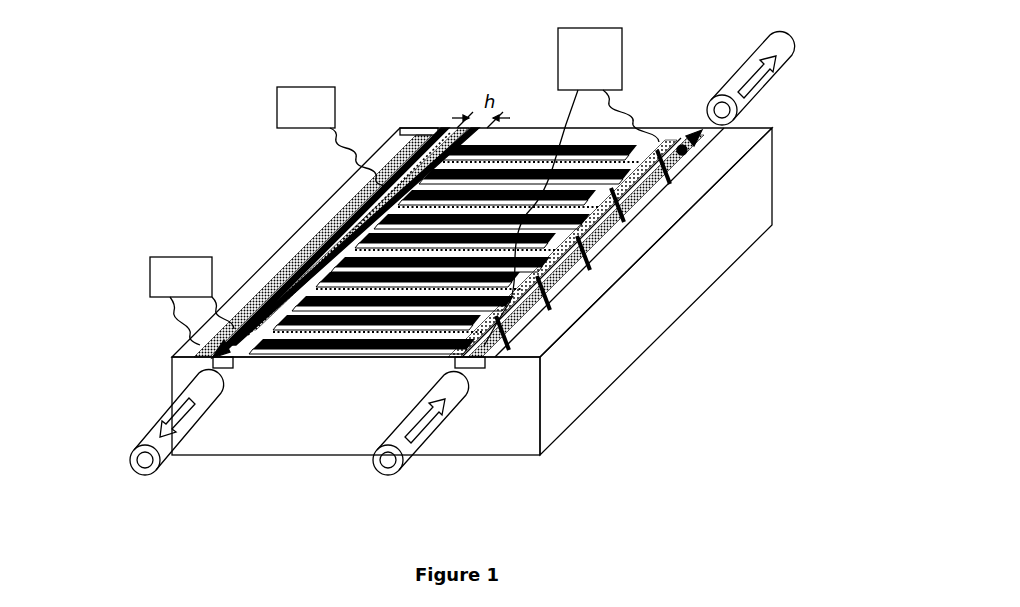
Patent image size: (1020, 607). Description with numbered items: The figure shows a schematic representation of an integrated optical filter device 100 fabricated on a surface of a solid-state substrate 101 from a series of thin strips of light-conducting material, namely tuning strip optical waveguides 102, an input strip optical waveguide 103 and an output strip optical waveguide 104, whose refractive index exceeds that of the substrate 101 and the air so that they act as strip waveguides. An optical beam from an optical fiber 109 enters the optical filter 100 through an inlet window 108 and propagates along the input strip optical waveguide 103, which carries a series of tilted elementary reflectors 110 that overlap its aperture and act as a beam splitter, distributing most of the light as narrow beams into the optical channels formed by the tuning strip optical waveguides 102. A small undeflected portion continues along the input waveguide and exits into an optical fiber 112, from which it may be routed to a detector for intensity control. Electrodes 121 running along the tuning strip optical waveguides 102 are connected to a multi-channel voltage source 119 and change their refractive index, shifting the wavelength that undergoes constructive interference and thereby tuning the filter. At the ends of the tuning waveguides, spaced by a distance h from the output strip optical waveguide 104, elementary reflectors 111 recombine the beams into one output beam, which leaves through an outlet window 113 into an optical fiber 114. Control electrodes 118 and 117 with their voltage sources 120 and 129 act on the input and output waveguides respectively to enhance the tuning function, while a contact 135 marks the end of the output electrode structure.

The integrated optical filter device 100 is at (436, 106).
The solid-state substrate 101 is at (617, 342).
The tuning strip optical waveguide 102 is at (572, 267).
The input strip optical waveguide 103 is at (650, 200).
The output strip optical waveguide 104 is at (438, 135).
The inlet window 108 is at (482, 368).
The optical fiber 109 is at (443, 417).
The elementary reflectors 110 is at (588, 267).
The elementary reflectors 111 is at (303, 257).
The optical fiber 112 is at (757, 95).
The outlet window 113 is at (213, 358).
The optical fiber 114 is at (147, 428).
The control electrode 117 is at (360, 213).
The control electrode 118 is at (652, 152).
The multi-channel voltage source 119 is at (277, 107).
The voltage source 120 is at (558, 60).
The electrodes 121 is at (367, 347).
The voltage source 129 is at (150, 272).
The contact point 135 is at (693, 128).